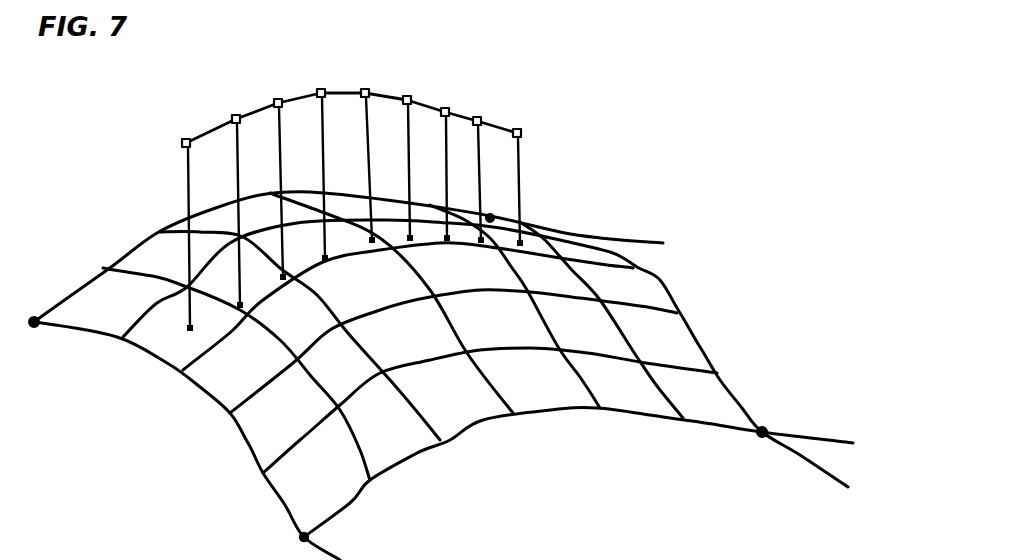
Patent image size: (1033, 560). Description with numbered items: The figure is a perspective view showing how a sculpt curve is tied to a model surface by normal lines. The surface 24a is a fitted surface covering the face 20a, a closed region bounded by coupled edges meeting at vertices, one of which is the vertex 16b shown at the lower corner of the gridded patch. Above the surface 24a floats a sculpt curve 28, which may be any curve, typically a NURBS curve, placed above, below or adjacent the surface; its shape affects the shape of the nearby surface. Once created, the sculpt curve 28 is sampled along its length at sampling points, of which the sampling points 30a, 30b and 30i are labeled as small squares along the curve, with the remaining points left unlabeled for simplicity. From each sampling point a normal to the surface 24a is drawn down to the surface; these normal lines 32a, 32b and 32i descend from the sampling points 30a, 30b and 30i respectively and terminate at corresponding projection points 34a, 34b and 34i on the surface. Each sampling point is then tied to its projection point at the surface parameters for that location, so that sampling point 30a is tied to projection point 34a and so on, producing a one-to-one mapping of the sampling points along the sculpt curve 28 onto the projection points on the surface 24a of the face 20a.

The vertex 16b is at (310, 536).
The face 20a is at (660, 278).
The surface 24a is at (160, 252).
The sculpt curve 28 is at (408, 98).
The sampling point 30a is at (186, 140).
The sampling point 30b is at (236, 118).
The sampling point 30i is at (517, 132).
The projection line 32a is at (186, 199).
The projection line 32b is at (236, 188).
The projection line 32i is at (517, 195).
The projection point 34a is at (193, 330).
The projection point 34b is at (243, 307).
The projection point 34i is at (522, 246).